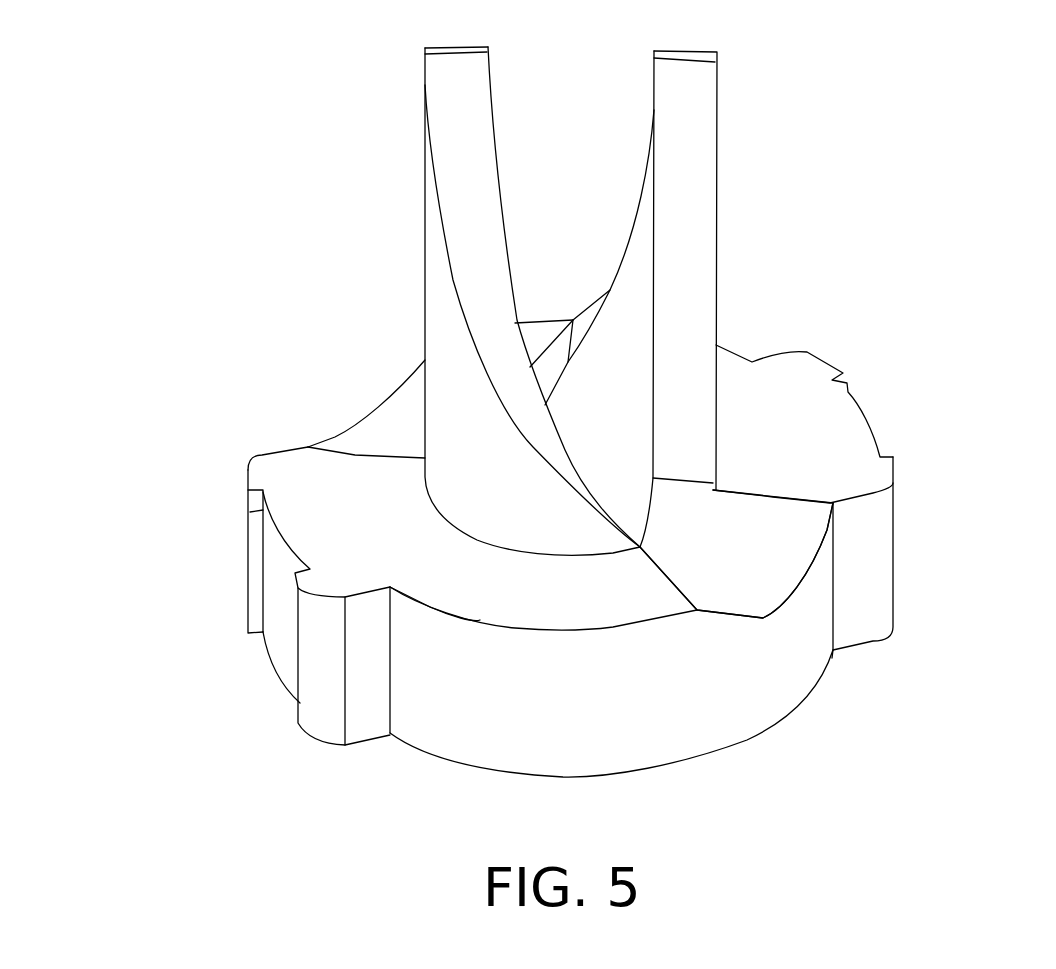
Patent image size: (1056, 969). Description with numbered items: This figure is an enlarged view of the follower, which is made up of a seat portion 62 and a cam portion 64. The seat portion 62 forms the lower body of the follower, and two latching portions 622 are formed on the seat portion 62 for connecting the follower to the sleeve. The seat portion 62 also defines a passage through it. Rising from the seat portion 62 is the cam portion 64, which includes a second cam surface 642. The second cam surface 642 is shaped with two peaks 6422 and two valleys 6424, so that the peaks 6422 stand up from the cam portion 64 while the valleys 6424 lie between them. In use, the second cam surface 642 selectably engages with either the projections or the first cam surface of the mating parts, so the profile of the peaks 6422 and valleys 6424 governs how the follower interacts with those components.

The seat portion 62 is at (513, 561).
The latching portion 622 is at (277, 567).
The cam portion 64 is at (637, 321).
The second cam surface 642 is at (463, 290).
The peak 6422 is at (435, 45).
The valley 6424 is at (767, 558).